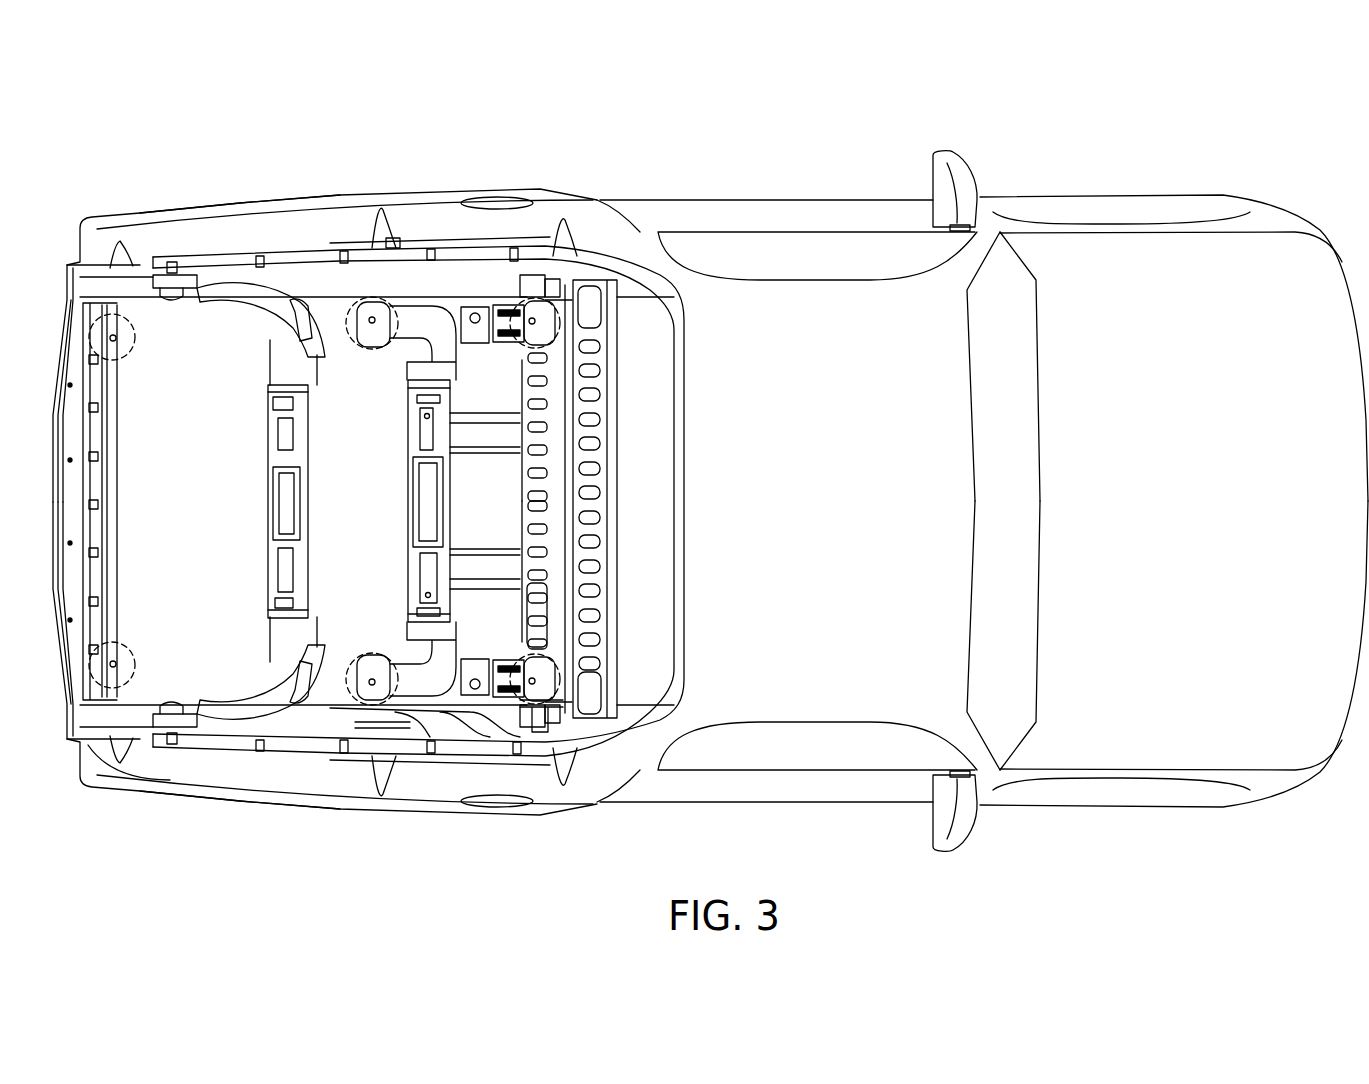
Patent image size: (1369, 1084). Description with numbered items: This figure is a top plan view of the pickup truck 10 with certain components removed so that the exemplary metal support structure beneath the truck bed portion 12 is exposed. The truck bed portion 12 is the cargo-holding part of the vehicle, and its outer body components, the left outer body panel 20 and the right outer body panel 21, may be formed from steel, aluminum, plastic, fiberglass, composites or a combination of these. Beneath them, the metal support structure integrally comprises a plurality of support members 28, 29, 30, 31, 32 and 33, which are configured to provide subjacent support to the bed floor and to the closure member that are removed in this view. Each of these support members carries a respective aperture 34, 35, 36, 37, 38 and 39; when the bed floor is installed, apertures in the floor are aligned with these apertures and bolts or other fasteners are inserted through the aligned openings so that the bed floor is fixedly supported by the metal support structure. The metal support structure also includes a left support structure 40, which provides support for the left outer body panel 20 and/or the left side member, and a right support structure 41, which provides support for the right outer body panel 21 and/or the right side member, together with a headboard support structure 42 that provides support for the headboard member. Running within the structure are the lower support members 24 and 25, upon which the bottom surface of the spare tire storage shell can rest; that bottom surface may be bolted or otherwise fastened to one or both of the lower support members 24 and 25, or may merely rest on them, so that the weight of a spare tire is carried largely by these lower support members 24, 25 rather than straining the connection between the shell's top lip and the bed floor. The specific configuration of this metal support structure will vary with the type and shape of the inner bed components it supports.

The pickup truck 10 is at (1038, 152).
The truck bed portion 12 is at (510, 150).
The left outer body panel 20 is at (298, 226).
The right outer body panel 21 is at (300, 780).
The lower support member 24 is at (268, 501).
The lower support member 25 is at (408, 501).
The support member 28 is at (538, 297).
The support member 29 is at (394, 245).
The support member 30 is at (113, 298).
The support member 31 is at (543, 733).
The support member 32 is at (373, 713).
The support member 33 is at (90, 788).
The aperture 34 is at (506, 345).
The aperture 35 is at (372, 326).
The aperture 36 is at (100, 350).
The aperture 37 is at (506, 660).
The aperture 38 is at (372, 678).
The aperture 39 is at (100, 654).
The left support structure 40 is at (248, 287).
The right support structure 41 is at (248, 715).
The headboard support structure 42 is at (588, 502).